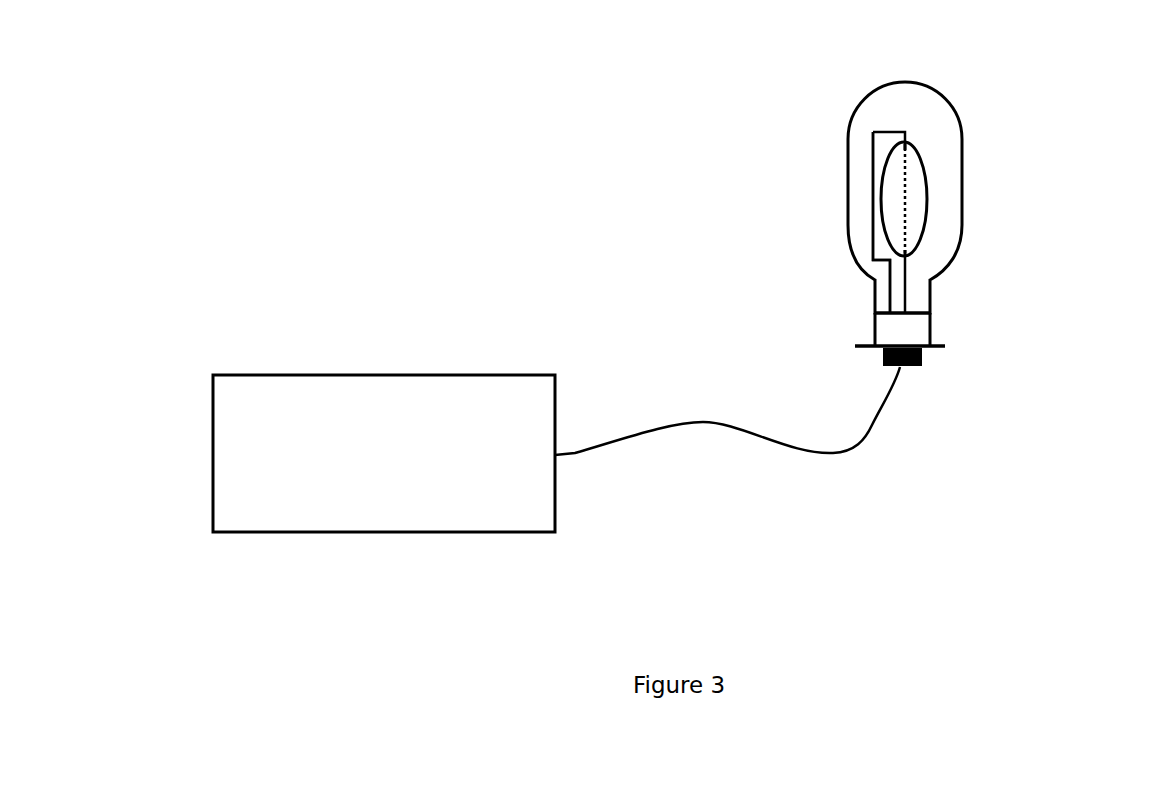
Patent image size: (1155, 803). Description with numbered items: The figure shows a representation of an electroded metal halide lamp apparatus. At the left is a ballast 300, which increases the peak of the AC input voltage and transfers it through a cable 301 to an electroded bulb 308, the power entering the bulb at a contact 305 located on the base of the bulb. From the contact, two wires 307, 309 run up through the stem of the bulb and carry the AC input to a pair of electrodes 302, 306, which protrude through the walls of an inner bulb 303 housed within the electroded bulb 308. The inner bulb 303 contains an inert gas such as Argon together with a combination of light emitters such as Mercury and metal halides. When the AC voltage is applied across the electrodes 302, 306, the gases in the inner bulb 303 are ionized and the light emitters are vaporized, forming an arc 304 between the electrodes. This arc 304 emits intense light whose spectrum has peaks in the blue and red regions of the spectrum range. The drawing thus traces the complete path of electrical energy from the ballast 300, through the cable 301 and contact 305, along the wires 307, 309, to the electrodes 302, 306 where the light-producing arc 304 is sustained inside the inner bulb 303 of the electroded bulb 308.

The ballast 300 is at (377, 370).
The cable 301 is at (785, 455).
The electrode 302 is at (910, 243).
The inner bulb 303 is at (879, 215).
The arc 304 is at (911, 198).
The contact 305 is at (924, 358).
The electrode 306 is at (911, 150).
The wire 307 is at (908, 294).
The electroded bulb 308 is at (841, 124).
The wire 309 is at (884, 293).